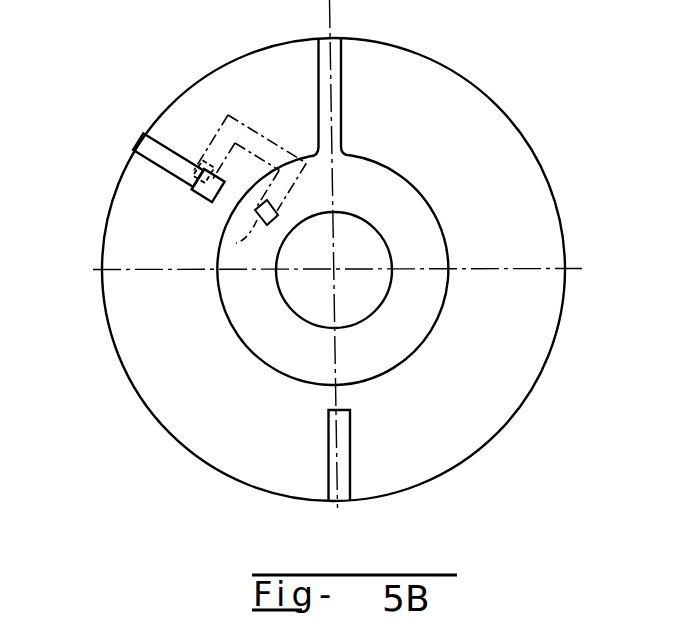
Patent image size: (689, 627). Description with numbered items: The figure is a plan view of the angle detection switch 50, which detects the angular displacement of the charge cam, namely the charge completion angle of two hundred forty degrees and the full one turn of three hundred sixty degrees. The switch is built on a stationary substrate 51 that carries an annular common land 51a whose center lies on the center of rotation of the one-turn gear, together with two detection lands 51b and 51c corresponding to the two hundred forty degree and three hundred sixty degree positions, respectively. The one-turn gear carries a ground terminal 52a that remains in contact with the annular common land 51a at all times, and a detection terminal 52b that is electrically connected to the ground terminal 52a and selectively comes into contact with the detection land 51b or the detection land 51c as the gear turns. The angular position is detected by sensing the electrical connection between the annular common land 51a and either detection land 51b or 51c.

The angle detection switch 50 is at (116, 101).
The stationary substrate 51 is at (538, 188).
The annular common land 51a is at (423, 236).
The detection land 51b is at (168, 148).
The detection land 51c is at (345, 457).
The ground terminal 52a is at (233, 242).
The detection terminal 52b is at (195, 185).